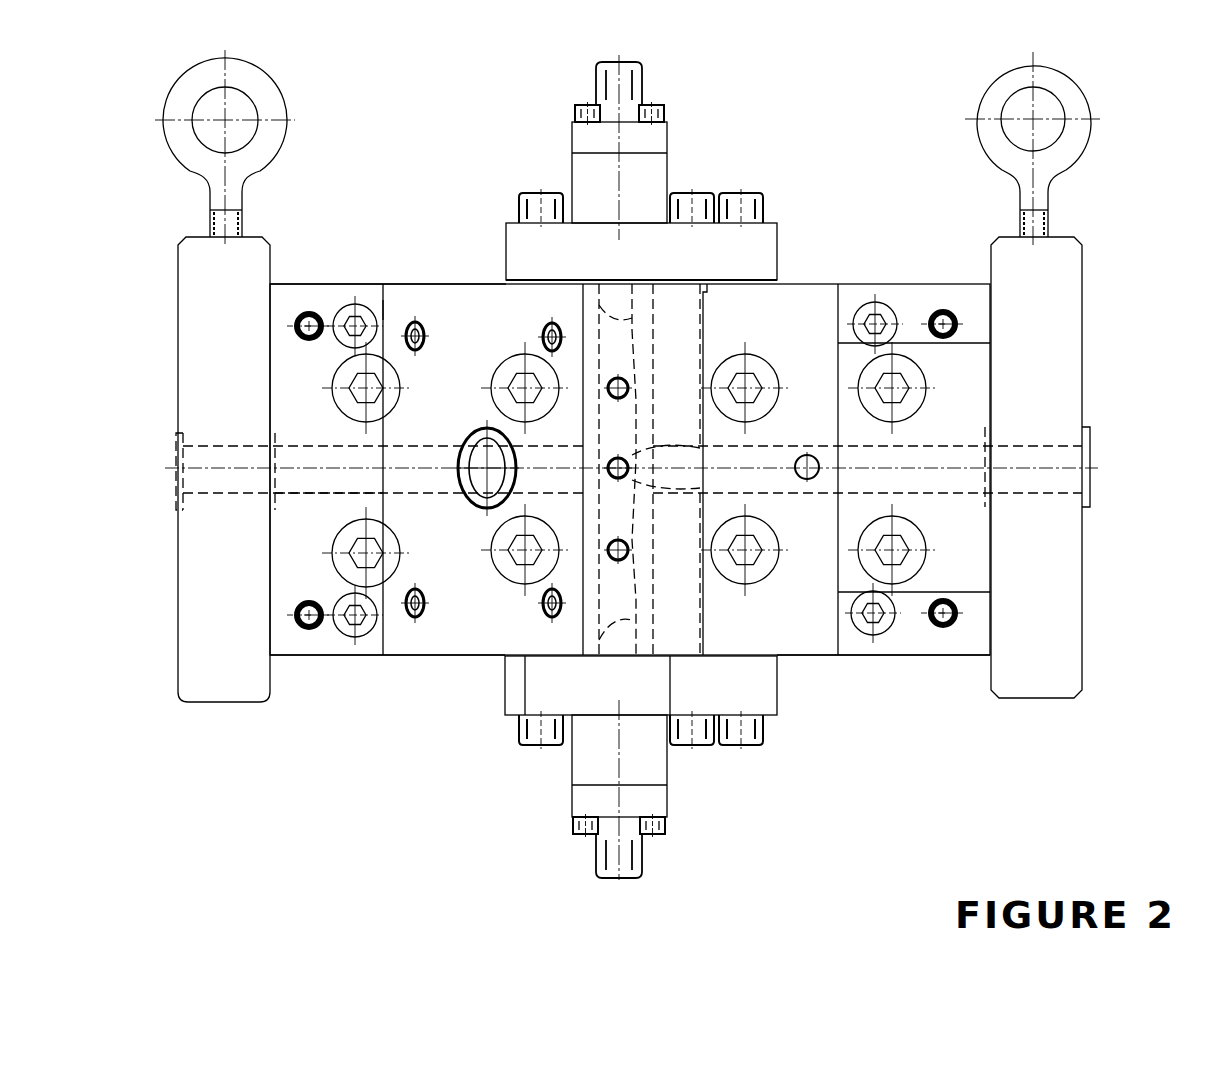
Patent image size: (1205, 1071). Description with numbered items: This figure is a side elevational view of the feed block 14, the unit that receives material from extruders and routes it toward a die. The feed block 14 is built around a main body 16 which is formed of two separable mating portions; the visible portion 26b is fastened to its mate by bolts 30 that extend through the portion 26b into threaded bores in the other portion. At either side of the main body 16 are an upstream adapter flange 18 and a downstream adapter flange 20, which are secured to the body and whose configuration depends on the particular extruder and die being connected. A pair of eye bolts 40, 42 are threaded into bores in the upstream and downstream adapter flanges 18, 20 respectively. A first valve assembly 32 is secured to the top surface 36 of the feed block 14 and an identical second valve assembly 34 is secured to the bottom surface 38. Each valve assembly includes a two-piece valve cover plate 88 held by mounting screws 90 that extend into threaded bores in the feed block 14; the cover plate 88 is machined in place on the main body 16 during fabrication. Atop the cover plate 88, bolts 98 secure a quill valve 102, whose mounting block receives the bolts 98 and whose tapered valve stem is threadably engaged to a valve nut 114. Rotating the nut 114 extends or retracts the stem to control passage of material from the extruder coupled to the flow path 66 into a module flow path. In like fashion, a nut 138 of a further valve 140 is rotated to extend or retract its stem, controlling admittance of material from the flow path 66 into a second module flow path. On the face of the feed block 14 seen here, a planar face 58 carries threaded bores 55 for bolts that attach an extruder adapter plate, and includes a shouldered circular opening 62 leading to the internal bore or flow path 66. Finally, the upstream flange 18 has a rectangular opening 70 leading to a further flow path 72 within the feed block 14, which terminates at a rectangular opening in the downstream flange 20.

The feed block 14 is at (903, 268).
The main body 16 is at (401, 645).
The upstream adapter flange 18 is at (220, 703).
The downstream adapter flange 20 is at (1048, 699).
The second mating portion 26b is at (313, 652).
The bolts 30 is at (340, 404).
The first valve assembly 32 is at (770, 240).
The second valve assembly 34 is at (775, 698).
The top surface 36 is at (478, 283).
The bottom surface 38 is at (466, 656).
The eye bolt 40 is at (288, 108).
The eye bolt 42 is at (978, 108).
The threaded bores 55 is at (425, 336).
The planar face 58 is at (415, 312).
The shouldered circular opening 62 is at (482, 436).
The flow path 66 is at (470, 492).
The rectangular opening 70 is at (178, 440).
The flow path 72 is at (333, 472).
The valve cover plate 88 is at (765, 262).
The mounting screws 90 is at (540, 200).
The bolts 98 is at (584, 107).
The quill valve 102 is at (650, 98).
The valve nut 114 is at (637, 70).
The nut 138 is at (630, 860).
The valve 140 is at (655, 805).